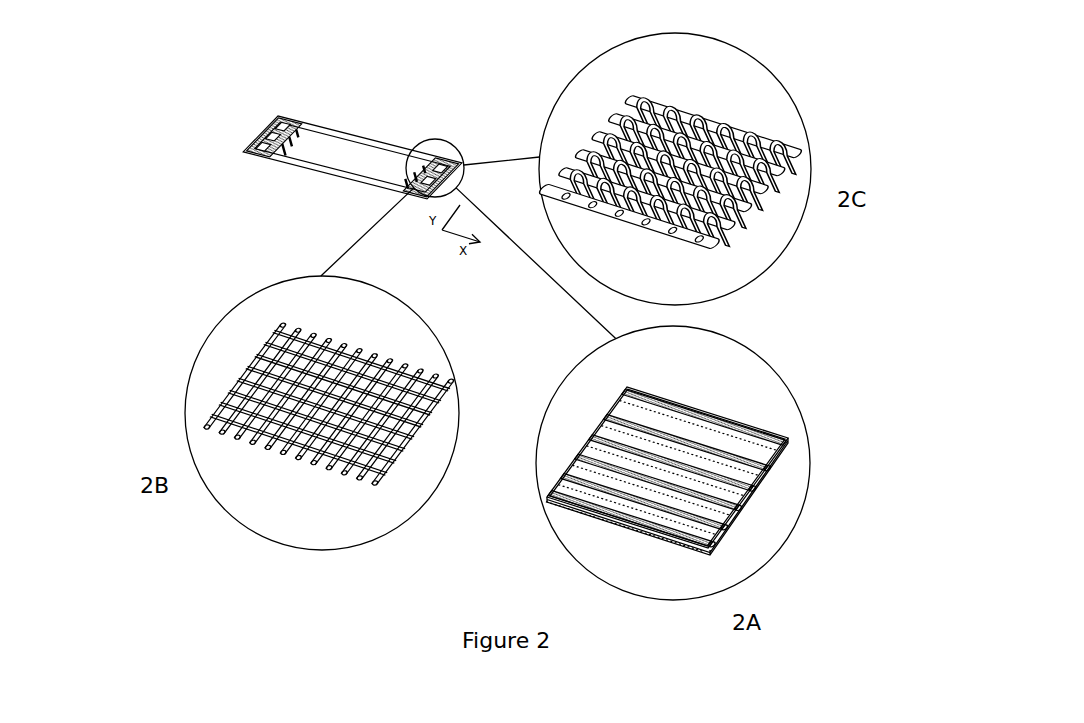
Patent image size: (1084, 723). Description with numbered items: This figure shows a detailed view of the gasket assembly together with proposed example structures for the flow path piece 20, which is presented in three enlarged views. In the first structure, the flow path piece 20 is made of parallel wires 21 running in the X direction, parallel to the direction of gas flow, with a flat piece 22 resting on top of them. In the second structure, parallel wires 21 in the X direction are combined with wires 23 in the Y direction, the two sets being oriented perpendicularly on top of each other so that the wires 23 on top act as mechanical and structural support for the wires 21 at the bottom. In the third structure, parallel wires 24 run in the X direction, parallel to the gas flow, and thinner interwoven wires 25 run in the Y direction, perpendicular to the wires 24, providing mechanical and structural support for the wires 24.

The flow path piece 20 is at (396, 197).
The parallel wires 21 is at (397, 463).
The flat piece 22 is at (723, 440).
The wires 23 is at (220, 402).
The parallel wires 24 is at (737, 227).
The interwoven wires 25 is at (758, 123).